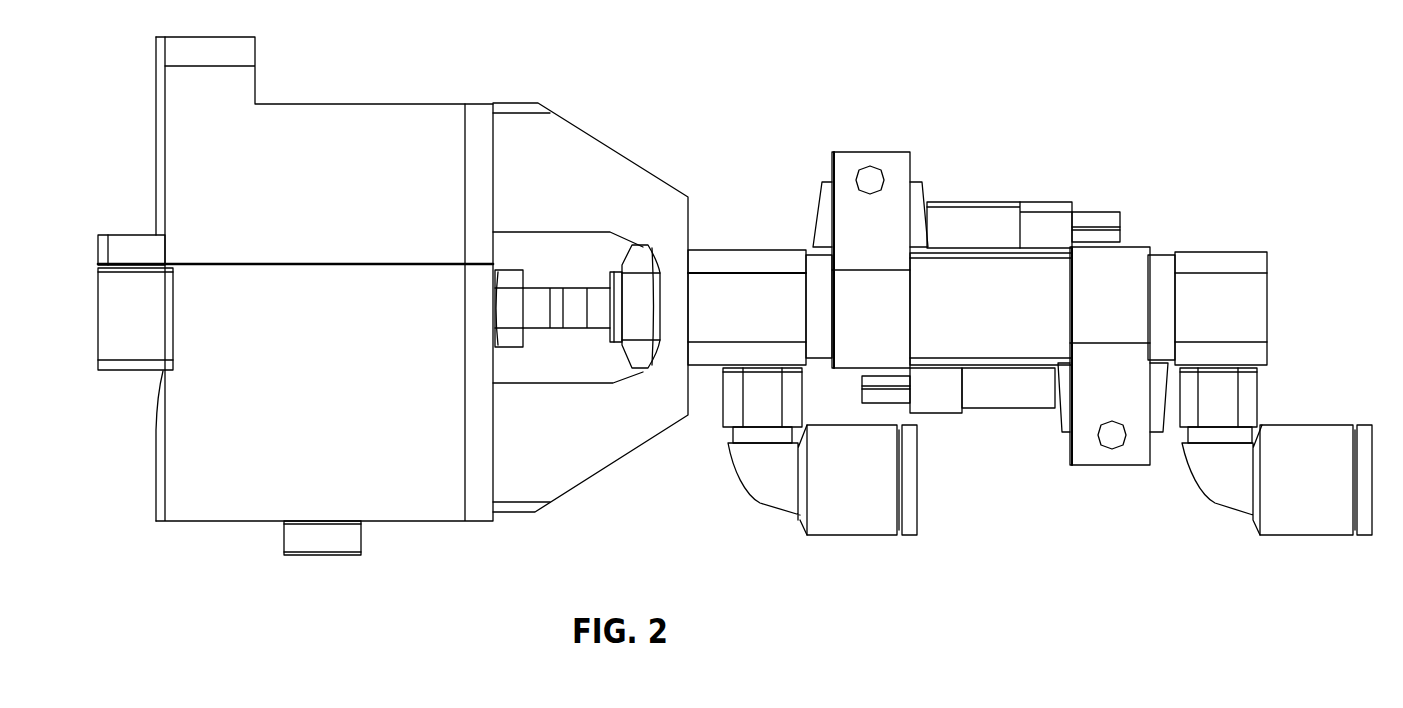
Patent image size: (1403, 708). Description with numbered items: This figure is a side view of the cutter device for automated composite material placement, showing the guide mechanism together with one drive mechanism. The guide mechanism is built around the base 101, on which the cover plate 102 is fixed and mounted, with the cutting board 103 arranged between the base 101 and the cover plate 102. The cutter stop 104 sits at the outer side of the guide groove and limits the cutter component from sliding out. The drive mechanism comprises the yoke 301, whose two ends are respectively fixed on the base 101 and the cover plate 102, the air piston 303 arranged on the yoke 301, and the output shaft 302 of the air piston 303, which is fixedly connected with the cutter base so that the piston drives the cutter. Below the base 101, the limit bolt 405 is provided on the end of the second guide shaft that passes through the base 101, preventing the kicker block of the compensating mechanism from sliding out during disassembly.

The base 101 is at (223, 507).
The cover plate 102 is at (343, 127).
The cutting board 103 is at (122, 247).
The cutter stop 104 is at (122, 327).
The yoke 301 is at (585, 470).
The output shaft 302 is at (595, 298).
The air piston 303 is at (900, 162).
The limit bolt 405 is at (348, 540).